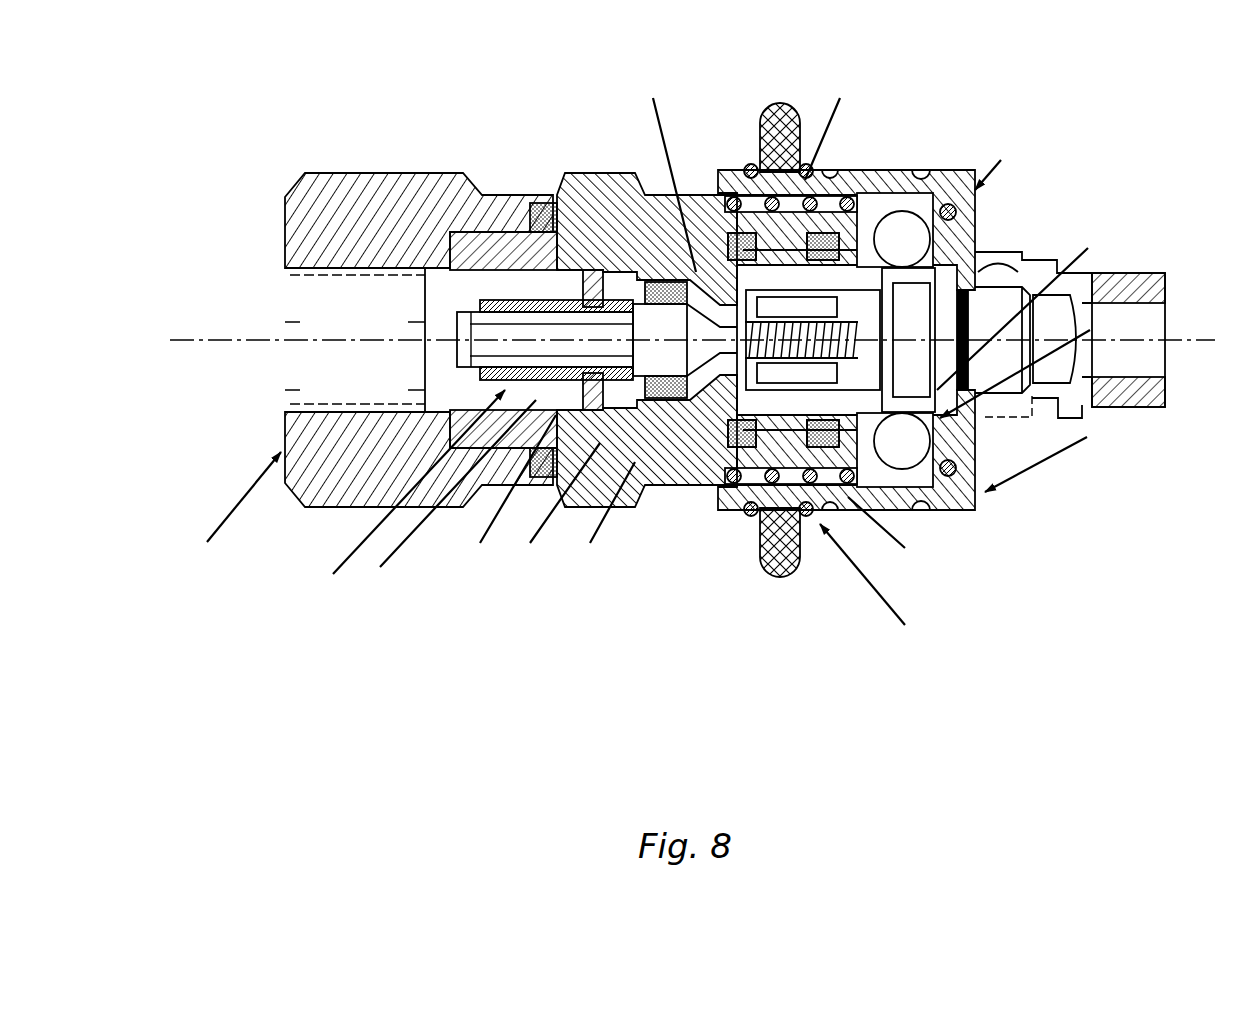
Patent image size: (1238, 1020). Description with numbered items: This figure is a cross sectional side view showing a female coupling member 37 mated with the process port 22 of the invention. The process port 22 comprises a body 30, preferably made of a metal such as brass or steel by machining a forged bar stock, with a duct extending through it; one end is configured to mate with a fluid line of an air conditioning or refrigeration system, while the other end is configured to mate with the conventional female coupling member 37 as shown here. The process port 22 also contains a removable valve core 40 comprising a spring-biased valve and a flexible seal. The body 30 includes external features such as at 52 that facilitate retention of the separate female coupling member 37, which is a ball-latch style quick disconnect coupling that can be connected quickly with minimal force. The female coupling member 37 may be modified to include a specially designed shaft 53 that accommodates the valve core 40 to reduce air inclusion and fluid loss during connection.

The process port 22 is at (1041, 251).
The body 30 is at (1003, 425).
The female coupling member 37 is at (588, 168).
The valve core 40 is at (949, 268).
The external features 52 is at (857, 256).
The shaft 53 is at (623, 398).